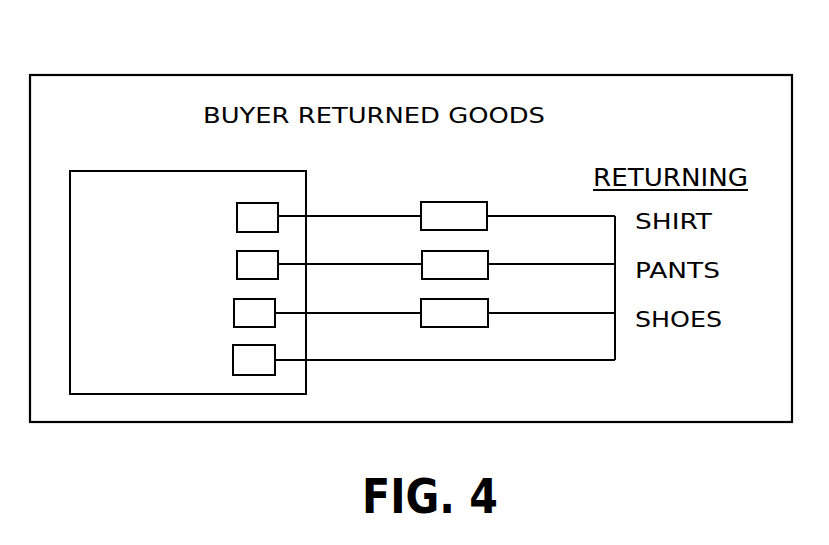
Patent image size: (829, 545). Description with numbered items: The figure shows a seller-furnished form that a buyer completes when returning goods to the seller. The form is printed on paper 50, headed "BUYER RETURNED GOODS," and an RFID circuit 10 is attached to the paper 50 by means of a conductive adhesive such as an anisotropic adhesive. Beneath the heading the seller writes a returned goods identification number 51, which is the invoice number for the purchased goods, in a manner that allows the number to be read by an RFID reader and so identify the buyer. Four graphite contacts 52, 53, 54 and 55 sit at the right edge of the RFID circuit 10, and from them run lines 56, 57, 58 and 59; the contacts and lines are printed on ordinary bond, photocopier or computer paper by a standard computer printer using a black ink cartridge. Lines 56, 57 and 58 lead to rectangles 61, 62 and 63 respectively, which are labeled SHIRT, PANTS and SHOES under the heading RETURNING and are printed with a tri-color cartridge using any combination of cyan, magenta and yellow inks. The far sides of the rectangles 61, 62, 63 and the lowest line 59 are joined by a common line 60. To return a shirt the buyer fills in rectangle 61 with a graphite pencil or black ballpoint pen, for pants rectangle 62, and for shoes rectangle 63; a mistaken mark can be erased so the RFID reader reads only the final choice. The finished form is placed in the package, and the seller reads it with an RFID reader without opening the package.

The RFID circuit 10 is at (146, 170).
The paper 50 is at (620, 75).
The returned goods identification number 51 is at (438, 137).
The graphite contact 52 is at (237, 227).
The graphite contact 53 is at (237, 270).
The graphite contact 54 is at (233, 317).
The graphite contact 55 is at (233, 368).
The line 56 is at (383, 214).
The line 57 is at (380, 263).
The line 58 is at (390, 312).
The line 59 is at (392, 358).
The line 60 is at (615, 346).
The rectangle 61 is at (487, 201).
The rectangle 62 is at (488, 250).
The rectangle 63 is at (488, 298).